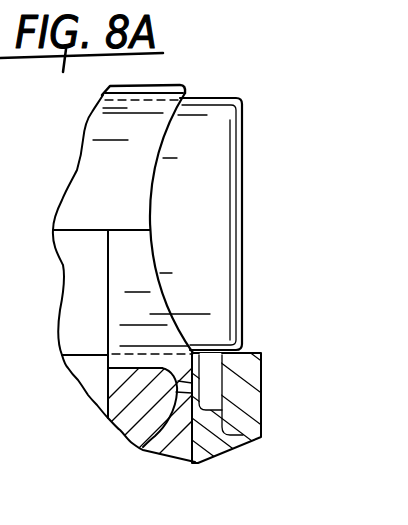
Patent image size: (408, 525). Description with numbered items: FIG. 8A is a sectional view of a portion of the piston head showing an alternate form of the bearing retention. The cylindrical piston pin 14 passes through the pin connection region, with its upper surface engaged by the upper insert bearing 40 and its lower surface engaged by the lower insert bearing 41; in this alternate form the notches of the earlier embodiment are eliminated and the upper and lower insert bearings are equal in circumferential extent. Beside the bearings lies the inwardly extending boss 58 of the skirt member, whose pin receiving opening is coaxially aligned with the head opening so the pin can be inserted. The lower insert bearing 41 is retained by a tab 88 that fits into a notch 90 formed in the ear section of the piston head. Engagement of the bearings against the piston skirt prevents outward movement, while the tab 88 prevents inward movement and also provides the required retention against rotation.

The upper insert bearing 40 is at (137, 160).
The piston pin 14 is at (205, 208).
The lower insert bearing 41 is at (132, 277).
The boss 58 is at (245, 367).
The tab 88 is at (247, 382).
The notch 90 is at (143, 447).